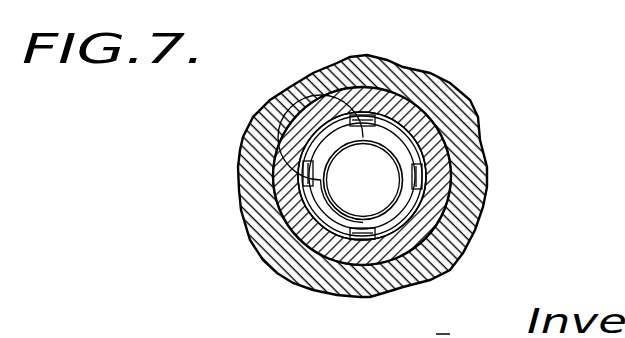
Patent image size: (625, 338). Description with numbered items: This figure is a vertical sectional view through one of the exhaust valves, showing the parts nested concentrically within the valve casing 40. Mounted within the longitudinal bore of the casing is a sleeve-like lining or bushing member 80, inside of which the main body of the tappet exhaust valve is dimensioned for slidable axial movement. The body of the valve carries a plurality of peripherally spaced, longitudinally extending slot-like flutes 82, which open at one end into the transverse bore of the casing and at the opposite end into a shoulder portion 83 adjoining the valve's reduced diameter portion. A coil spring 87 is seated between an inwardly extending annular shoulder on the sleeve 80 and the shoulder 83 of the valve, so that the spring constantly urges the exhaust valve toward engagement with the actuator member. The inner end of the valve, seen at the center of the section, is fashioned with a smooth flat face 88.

The valve casing 40 is at (390, 81).
The sleeve lining 80 is at (400, 105).
The coil spring 87 is at (405, 130).
The shoulder portion 83 is at (403, 161).
The flutes 82 is at (312, 155).
The flat face 88 is at (384, 176).